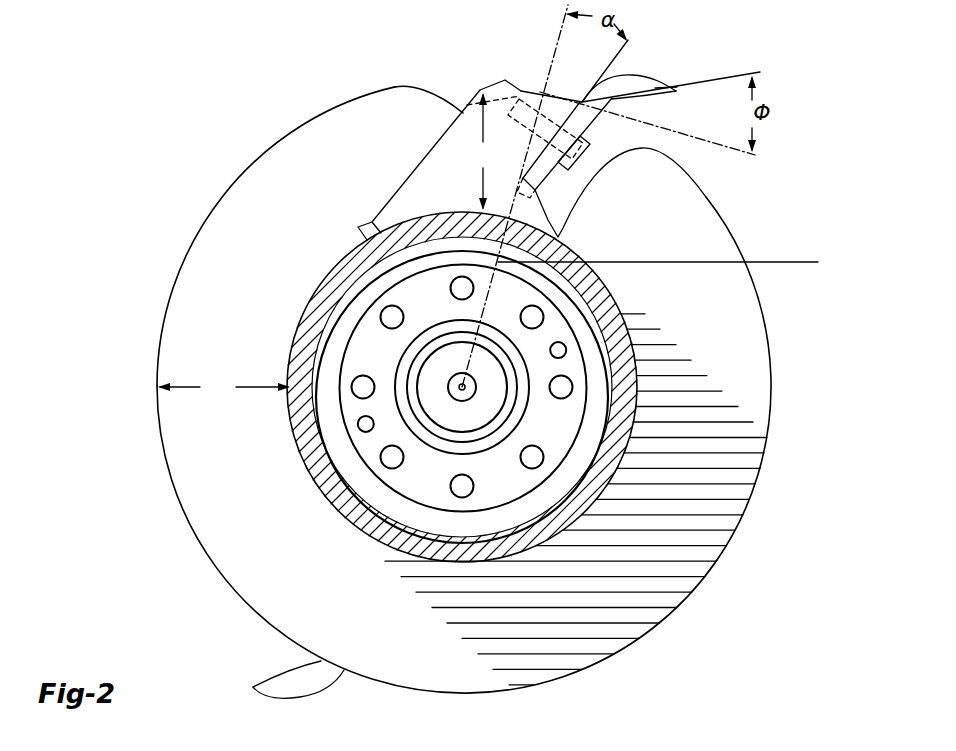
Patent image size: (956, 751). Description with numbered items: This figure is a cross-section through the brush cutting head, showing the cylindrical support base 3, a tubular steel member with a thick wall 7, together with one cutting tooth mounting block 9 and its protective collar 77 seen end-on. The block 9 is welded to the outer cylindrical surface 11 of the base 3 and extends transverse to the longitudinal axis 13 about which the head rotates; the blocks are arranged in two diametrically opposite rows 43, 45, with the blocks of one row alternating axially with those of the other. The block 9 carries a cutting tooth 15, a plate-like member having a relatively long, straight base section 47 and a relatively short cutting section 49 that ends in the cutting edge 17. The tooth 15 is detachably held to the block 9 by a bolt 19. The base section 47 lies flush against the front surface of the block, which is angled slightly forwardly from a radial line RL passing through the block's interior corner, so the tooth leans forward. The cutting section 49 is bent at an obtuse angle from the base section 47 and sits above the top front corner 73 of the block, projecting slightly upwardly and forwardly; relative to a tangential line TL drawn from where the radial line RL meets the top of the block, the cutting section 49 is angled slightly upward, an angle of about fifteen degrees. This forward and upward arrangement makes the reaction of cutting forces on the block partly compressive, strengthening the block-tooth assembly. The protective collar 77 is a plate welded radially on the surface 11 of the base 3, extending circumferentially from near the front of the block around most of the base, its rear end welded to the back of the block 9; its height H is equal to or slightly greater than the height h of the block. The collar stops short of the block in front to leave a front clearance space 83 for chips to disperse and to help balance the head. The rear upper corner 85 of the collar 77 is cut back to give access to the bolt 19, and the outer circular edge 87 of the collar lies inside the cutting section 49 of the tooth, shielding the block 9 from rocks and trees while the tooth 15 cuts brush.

The cylindrical support base 3 is at (626, 302).
The thick wall 7 is at (618, 413).
The cutting tooth mounting block 9 is at (446, 118).
The outer cylindrical surface 11 is at (642, 347).
The longitudinal axis 13 is at (458, 385).
The cutting tooth 15 is at (645, 62).
The cutting edge 17 is at (677, 88).
The bolt 19 is at (507, 78).
The row of blocks 43 is at (472, 81).
The row of blocks 45 is at (332, 687).
The base section 47 is at (553, 186).
The cutting section 49 is at (653, 99).
The top front corner 73 is at (582, 100).
The protective collar 77 is at (760, 465).
The front clearance space 83 is at (556, 205).
The rear upper corner 85 is at (399, 86).
The outer circular edge 87 is at (745, 497).
The tangential line TL is at (758, 153).
The radial line RL is at (673, 257).
The collar height H is at (224, 388).
The block height h is at (483, 151).